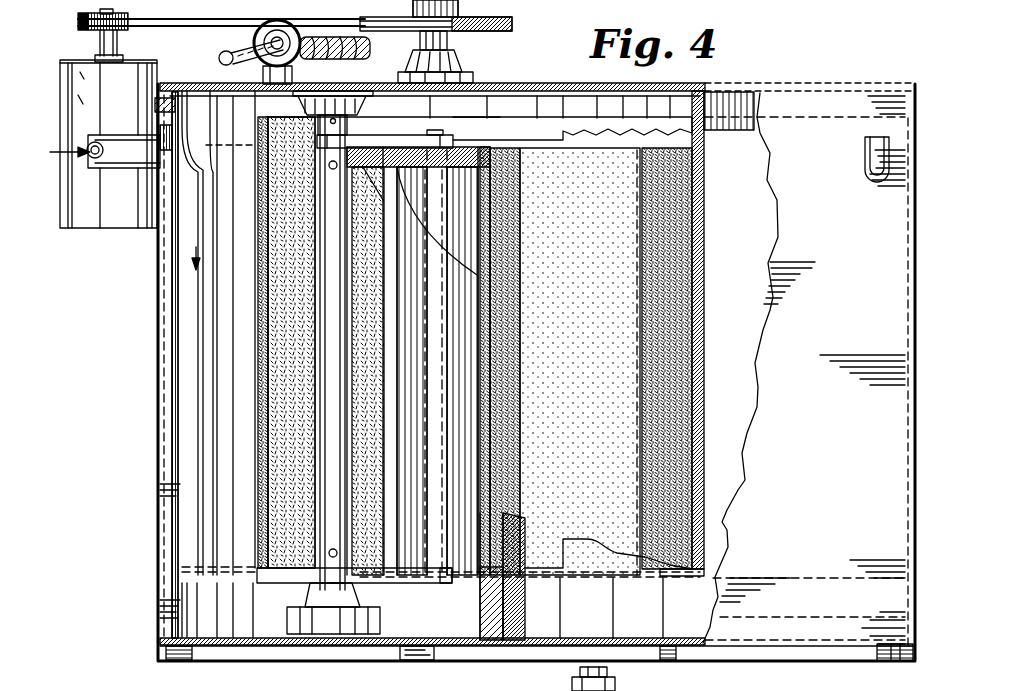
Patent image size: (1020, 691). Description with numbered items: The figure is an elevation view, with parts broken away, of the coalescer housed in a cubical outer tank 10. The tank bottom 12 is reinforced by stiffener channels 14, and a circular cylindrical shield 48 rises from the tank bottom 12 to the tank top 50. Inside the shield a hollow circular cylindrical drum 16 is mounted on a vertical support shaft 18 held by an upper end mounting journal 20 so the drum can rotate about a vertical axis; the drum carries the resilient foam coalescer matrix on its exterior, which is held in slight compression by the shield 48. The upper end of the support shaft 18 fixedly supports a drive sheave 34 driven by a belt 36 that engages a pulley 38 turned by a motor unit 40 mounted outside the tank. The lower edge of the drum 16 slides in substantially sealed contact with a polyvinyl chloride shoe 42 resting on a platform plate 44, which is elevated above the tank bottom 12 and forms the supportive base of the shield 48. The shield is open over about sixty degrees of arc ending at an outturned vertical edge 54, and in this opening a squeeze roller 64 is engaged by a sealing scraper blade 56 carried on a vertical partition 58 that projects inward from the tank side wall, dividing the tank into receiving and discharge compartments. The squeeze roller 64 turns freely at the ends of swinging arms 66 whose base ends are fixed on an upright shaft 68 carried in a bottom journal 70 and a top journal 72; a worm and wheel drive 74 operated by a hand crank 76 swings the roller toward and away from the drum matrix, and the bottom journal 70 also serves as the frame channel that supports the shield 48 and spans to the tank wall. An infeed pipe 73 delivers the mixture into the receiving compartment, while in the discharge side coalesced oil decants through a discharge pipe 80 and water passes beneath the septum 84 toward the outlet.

The outer tank 10 is at (897, 85).
The tank bottom 12 is at (490, 638).
The stiffener channels 14 is at (203, 650).
The drum 16 is at (262, 150).
The support shaft 18 is at (450, 38).
The upper end mounting journal 20 is at (460, 64).
The drive sheave 34 is at (503, 17).
The belt 36 is at (331, 34).
The pulley 38 is at (128, 17).
The motor unit 40 is at (104, 222).
The polyvinyl chloride shoe 42 is at (262, 550).
The platform plate 44 is at (267, 570).
The circular cylindrical shield 48 is at (704, 144).
The tank top 50 is at (738, 84).
The outturned vertical edge 54 is at (260, 450).
The scraper blade 56 is at (507, 516).
The partition 58 is at (530, 532).
The squeeze roller 64 is at (487, 378).
The swinging arms 66 is at (392, 136).
The upright shaft 68 is at (325, 388).
The bottom journal 70 is at (170, 398).
The top journal 72 is at (300, 106).
The infeed pipe 73 is at (117, 170).
The worm and wheel drive 74 is at (254, 42).
The hand crank 76 is at (219, 60).
The discharge pipe 80 is at (866, 162).
The septum 84 is at (828, 118).